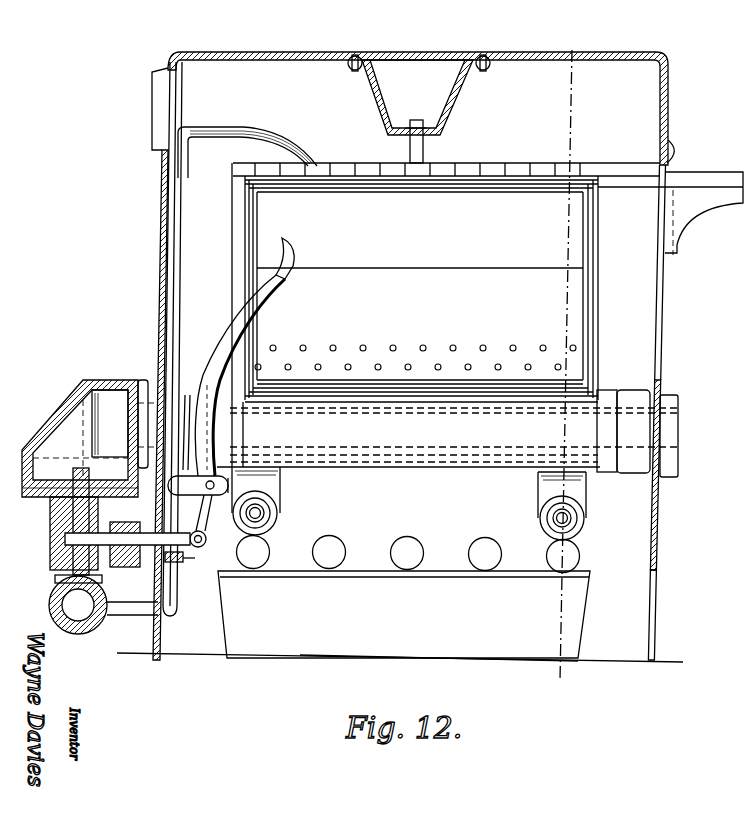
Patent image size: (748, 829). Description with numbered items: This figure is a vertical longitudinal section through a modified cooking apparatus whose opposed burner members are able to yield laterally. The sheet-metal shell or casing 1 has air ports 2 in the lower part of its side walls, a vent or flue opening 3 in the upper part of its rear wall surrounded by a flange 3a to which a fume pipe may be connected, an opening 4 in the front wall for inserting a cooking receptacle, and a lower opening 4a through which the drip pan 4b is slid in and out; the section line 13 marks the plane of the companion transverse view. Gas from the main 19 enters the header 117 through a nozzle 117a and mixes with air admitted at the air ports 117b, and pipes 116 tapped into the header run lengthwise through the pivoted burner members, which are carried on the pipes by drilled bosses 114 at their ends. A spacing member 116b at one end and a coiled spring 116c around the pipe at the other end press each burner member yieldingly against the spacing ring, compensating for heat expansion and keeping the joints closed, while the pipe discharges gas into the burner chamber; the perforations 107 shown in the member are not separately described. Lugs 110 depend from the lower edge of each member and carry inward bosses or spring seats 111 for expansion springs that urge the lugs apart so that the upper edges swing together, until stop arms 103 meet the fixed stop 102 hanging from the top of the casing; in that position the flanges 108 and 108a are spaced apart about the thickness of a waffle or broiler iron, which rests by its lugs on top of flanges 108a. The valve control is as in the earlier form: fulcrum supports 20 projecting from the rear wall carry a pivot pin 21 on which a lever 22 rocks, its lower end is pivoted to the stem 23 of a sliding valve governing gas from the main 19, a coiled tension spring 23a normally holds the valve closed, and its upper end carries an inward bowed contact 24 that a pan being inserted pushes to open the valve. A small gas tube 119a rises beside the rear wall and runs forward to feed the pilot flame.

The shell or casing 1 is at (160, 202).
The air ports 2 is at (262, 555).
The vent or flue opening 3 is at (165, 111).
The flange 3a is at (158, 83).
The opening 4 is at (663, 295).
The drip pan opening 4a is at (656, 590).
The drip pan 4b is at (572, 622).
The section line 13- 13 is at (566, 366).
The main 19 is at (98, 626).
The fulcrum supports 20 is at (198, 487).
The pivot or fulcrum pin 21 is at (224, 484).
The lever 22 is at (230, 338).
The valve stem 23 is at (153, 535).
The coiled tension spring 23a is at (186, 562).
The contact 24 is at (295, 264).
The fixed stop 102 is at (458, 113).
The stop arms 103 is at (425, 149).
The perforations 107 is at (378, 364).
The flange 108 is at (243, 229).
The flange 108a is at (359, 176).
The lugs 110 is at (276, 496).
The bosses or spring seats 111 is at (264, 517).
The drilled bosses 114 is at (222, 426).
The gas pipes 116 is at (157, 395).
The spacing member 116b is at (643, 388).
The coiled spring 116c is at (186, 397).
The header 117 is at (93, 380).
The nozzle 117a is at (108, 490).
The air ports 117b is at (53, 495).
The flue pipe 119a is at (220, 133).